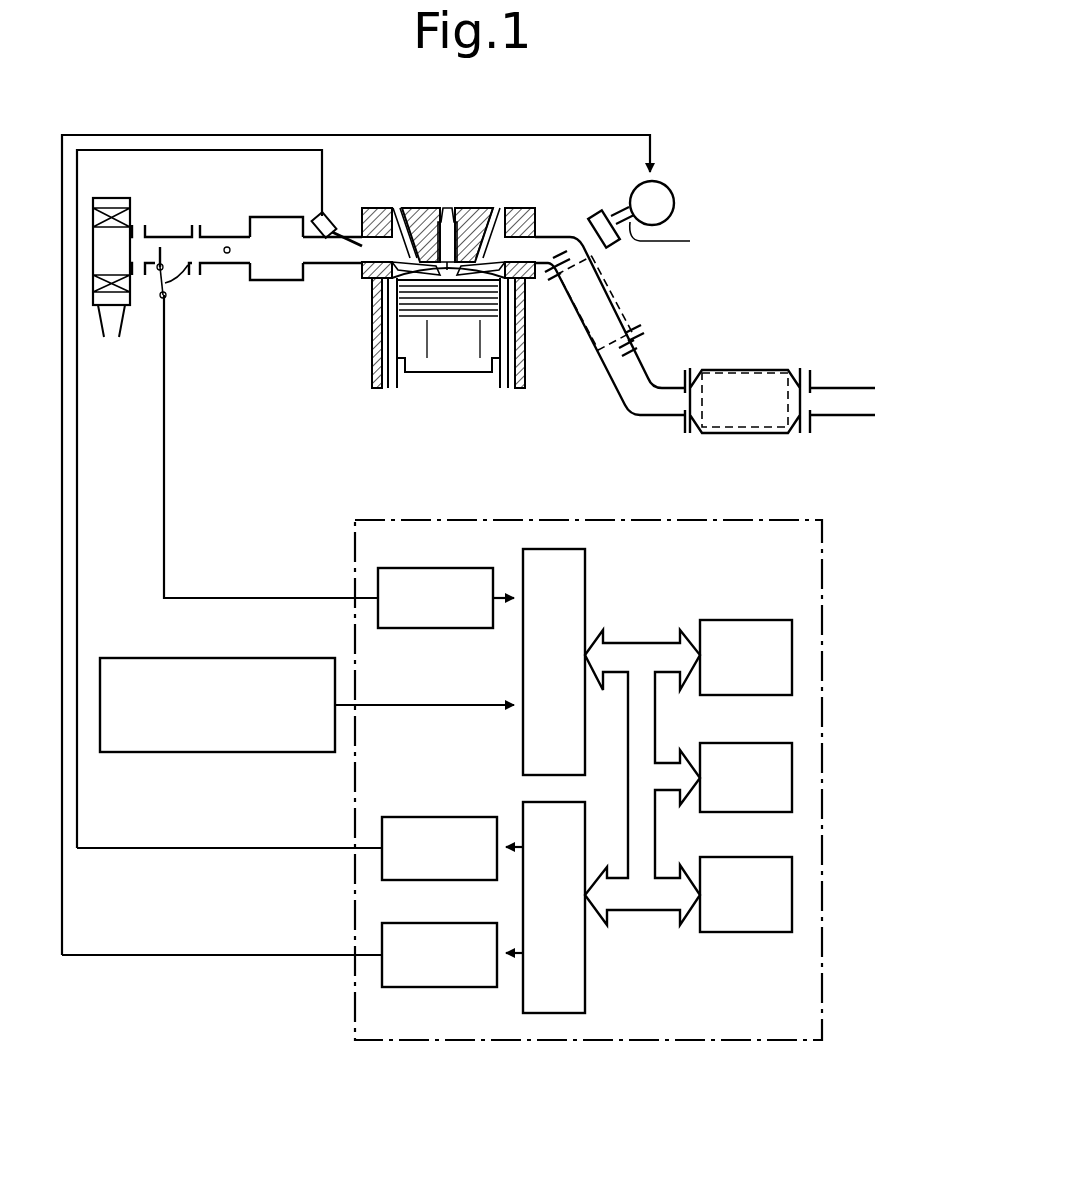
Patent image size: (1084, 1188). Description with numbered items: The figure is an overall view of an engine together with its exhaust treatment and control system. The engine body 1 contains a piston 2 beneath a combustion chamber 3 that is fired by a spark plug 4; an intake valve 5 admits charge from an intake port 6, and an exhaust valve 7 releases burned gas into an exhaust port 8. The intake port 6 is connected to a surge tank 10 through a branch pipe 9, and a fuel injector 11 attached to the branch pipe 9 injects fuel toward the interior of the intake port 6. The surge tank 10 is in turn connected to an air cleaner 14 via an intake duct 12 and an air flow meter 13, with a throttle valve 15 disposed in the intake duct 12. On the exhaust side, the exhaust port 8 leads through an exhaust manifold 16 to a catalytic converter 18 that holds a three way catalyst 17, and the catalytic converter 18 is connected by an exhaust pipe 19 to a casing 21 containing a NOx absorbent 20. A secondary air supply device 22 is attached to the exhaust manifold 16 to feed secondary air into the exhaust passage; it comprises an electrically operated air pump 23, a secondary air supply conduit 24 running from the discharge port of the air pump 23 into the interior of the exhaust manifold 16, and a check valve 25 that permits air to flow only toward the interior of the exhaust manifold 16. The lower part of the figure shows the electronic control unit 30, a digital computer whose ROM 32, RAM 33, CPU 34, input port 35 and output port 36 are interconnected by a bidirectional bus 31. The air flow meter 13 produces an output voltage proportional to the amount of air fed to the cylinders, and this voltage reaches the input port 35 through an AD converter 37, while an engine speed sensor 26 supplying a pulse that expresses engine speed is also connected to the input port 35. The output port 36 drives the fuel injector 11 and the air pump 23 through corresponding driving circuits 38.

The engine body 1 is at (534, 372).
The piston 2 is at (455, 350).
The combustion chamber 3 is at (446, 276).
The spark plug 4 is at (449, 224).
The intake valve 5 is at (395, 230).
The intake port 6 is at (372, 240).
The exhaust valve 7 is at (496, 228).
The exhaust port 8 is at (518, 240).
The branch pipe 9 is at (322, 265).
The surge tank 10 is at (272, 282).
The fuel injector 11 is at (310, 218).
The intake duct 12 is at (204, 237).
The air flow meter 13 is at (163, 240).
The air cleaner 14 is at (110, 198).
The throttle valve 15 is at (228, 248).
The exhaust manifold 16 is at (560, 237).
The three way catalyst 17 is at (615, 293).
The catalytic converter 18 is at (634, 327).
The exhaust pipe 19 is at (630, 352).
The NOx absorbent 20 is at (760, 370).
The casing 21 is at (790, 367).
The secondary air supply device 22 is at (615, 212).
The air pump 23 is at (675, 178).
The secondary air supply conduit 24 is at (676, 237).
The check valve 25 is at (602, 250).
The engine speed sensor 26 is at (218, 658).
The electronic control unit 30 is at (706, 518).
The bidirectional bus 31 is at (642, 642).
The ROM 32 is at (762, 620).
The RAM 33 is at (760, 743).
The CPU 34 is at (760, 857).
The input port 35 is at (585, 565).
The output port 36 is at (585, 985).
The AD converter 37 is at (378, 582).
The driving circuit 38 is at (382, 834).